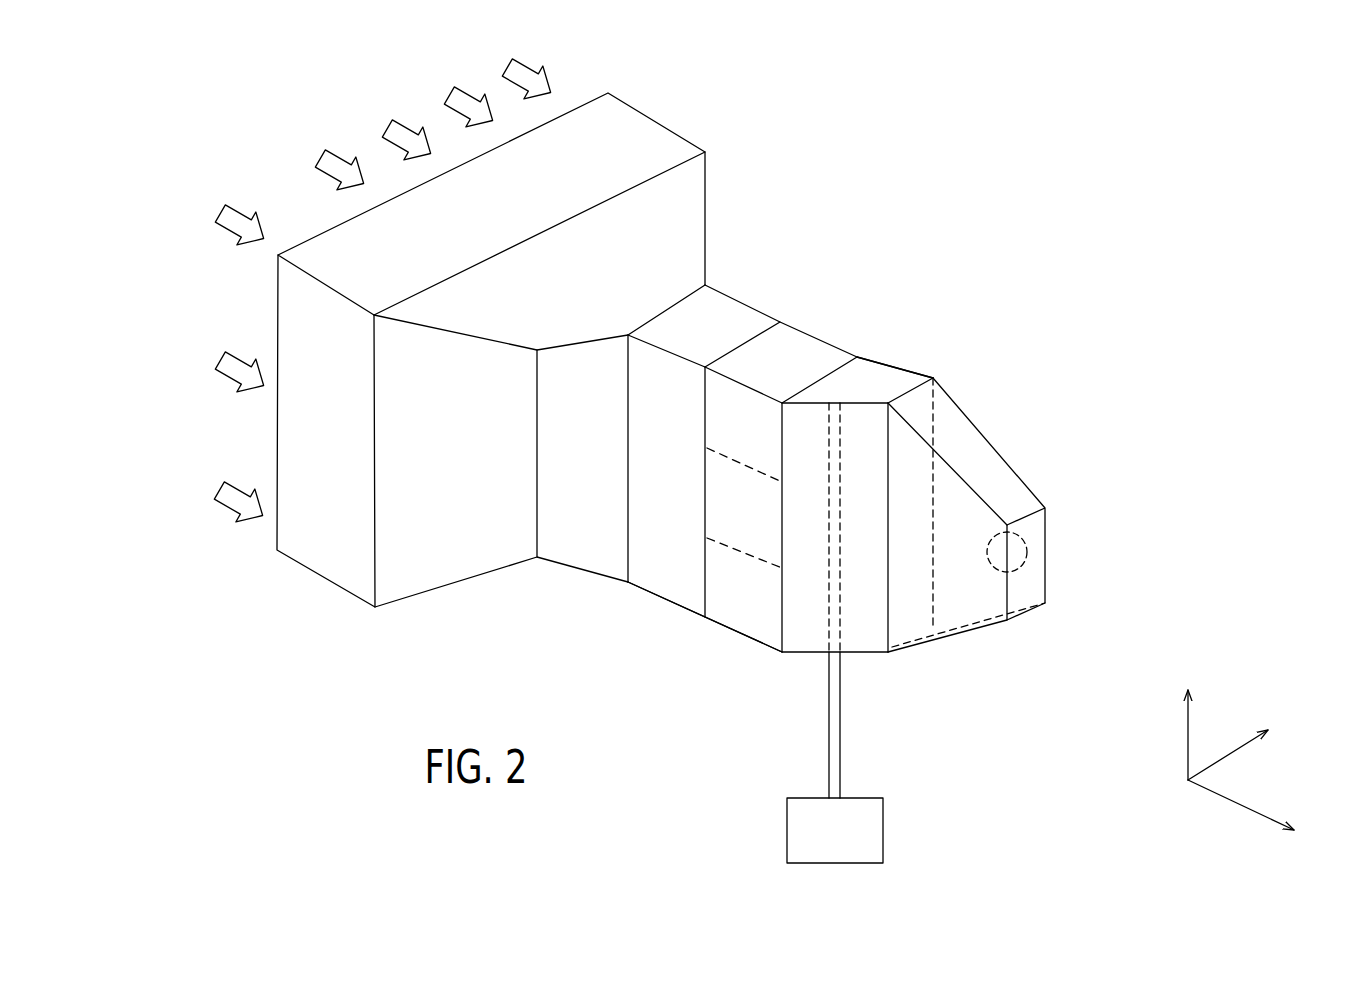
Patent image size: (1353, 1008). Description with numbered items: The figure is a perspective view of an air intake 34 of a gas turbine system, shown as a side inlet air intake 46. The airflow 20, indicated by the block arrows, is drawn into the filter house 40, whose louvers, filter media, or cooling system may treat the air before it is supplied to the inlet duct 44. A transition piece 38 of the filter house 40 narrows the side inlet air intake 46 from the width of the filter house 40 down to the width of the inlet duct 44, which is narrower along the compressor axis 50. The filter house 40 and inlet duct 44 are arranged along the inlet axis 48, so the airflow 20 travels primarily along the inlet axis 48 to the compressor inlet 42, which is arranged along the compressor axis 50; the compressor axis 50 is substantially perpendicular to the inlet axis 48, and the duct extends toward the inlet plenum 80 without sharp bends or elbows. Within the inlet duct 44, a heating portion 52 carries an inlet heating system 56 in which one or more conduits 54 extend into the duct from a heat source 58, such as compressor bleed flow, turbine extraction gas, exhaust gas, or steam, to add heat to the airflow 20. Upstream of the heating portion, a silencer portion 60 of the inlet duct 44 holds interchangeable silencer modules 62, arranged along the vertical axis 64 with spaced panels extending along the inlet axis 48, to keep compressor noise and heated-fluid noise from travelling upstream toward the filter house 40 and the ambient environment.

The airflow 20 is at (243, 213).
The air intake 34 is at (776, 388).
The side inlet air intake 46 is at (1102, 142).
The transition piece 38 is at (553, 336).
The filter house 40 is at (657, 122).
The inlet duct 44 is at (833, 322).
The heating portion 52 is at (897, 367).
The inlet plenum 80 is at (987, 442).
The compressor inlet 42 is at (1025, 560).
The silencer modules 62 is at (718, 582).
The silencer portion 60 is at (743, 637).
The conduits 54 is at (840, 782).
The heat source 58 is at (883, 830).
The inlet heating system 56 is at (859, 633).
The vertical axis 64 is at (1187, 737).
The compressor axis 50 is at (1223, 757).
The inlet axis 48 is at (1237, 803).